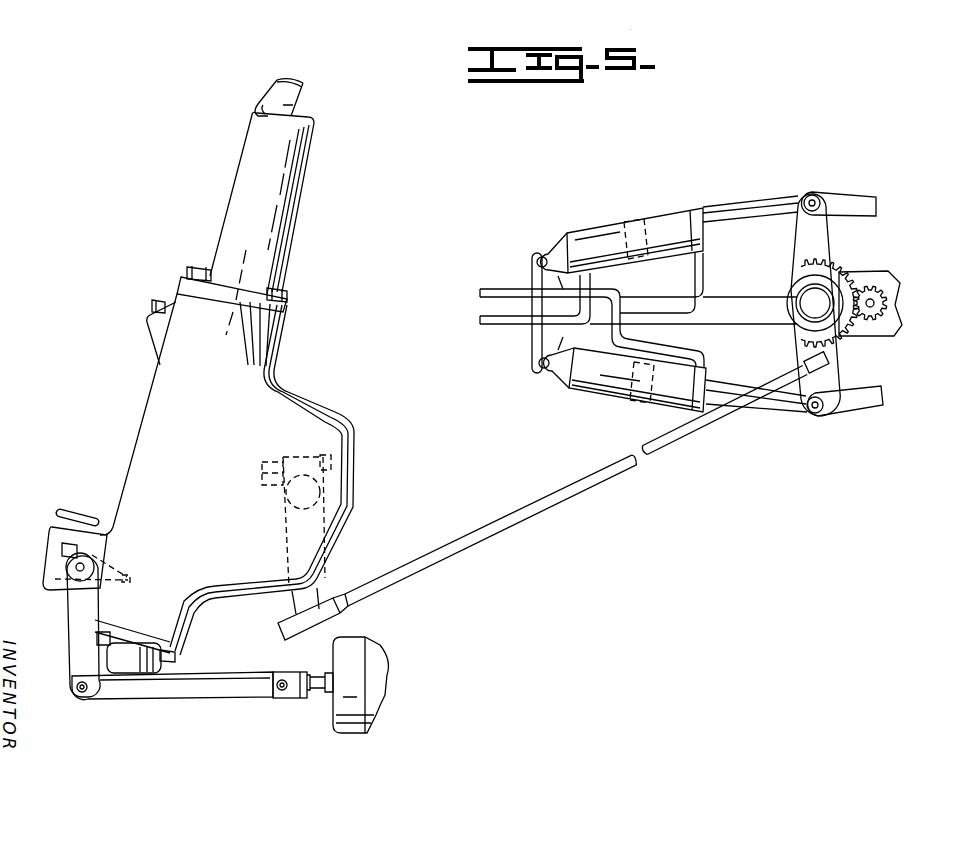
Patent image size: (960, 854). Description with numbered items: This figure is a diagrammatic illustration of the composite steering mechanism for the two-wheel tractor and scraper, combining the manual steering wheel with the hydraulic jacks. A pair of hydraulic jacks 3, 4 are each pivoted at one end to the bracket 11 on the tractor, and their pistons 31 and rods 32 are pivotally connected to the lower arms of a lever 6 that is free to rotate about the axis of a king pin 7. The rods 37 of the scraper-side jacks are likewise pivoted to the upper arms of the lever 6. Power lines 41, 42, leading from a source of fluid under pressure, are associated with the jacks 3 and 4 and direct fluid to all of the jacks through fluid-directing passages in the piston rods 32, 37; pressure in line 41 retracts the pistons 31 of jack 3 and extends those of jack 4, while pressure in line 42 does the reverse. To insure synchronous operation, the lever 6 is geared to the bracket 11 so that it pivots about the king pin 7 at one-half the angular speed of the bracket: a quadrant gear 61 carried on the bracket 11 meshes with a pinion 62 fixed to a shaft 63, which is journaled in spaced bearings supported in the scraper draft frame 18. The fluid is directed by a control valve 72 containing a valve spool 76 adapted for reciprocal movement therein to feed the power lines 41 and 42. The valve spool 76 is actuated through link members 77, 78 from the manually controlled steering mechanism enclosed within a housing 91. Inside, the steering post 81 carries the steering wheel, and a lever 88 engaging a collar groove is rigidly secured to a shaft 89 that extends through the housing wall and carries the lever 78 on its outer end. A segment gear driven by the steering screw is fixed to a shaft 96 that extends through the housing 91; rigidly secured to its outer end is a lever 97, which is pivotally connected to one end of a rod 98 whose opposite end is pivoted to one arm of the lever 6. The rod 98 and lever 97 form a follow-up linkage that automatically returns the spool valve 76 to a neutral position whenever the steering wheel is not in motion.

The hydraulic jack 3 is at (596, 232).
The hydraulic jack 4 is at (594, 386).
The lever 6 is at (818, 236).
The king pin 7 is at (808, 300).
The bracket 11 is at (735, 285).
The scraper draft frame 18 is at (884, 270).
The piston 31 is at (647, 230).
The piston rod 32 is at (756, 188).
The piston rod 37 is at (858, 203).
The power line 41 is at (505, 322).
The power line 42 is at (505, 272).
The quadrant gear 61 is at (830, 272).
The pinion 62 is at (884, 302).
The shaft 63 is at (874, 330).
The control valve 72 is at (372, 668).
The valve spool 76 is at (326, 690).
The link member 77 is at (180, 688).
The lever 78 is at (70, 655).
The steering post 81 is at (281, 98).
The lever 88 is at (130, 580).
The shaft 89 is at (49, 560).
The housing 91 is at (203, 383).
The shaft 96 is at (310, 475).
The lever 97 is at (322, 600).
The rod 98 is at (586, 498).